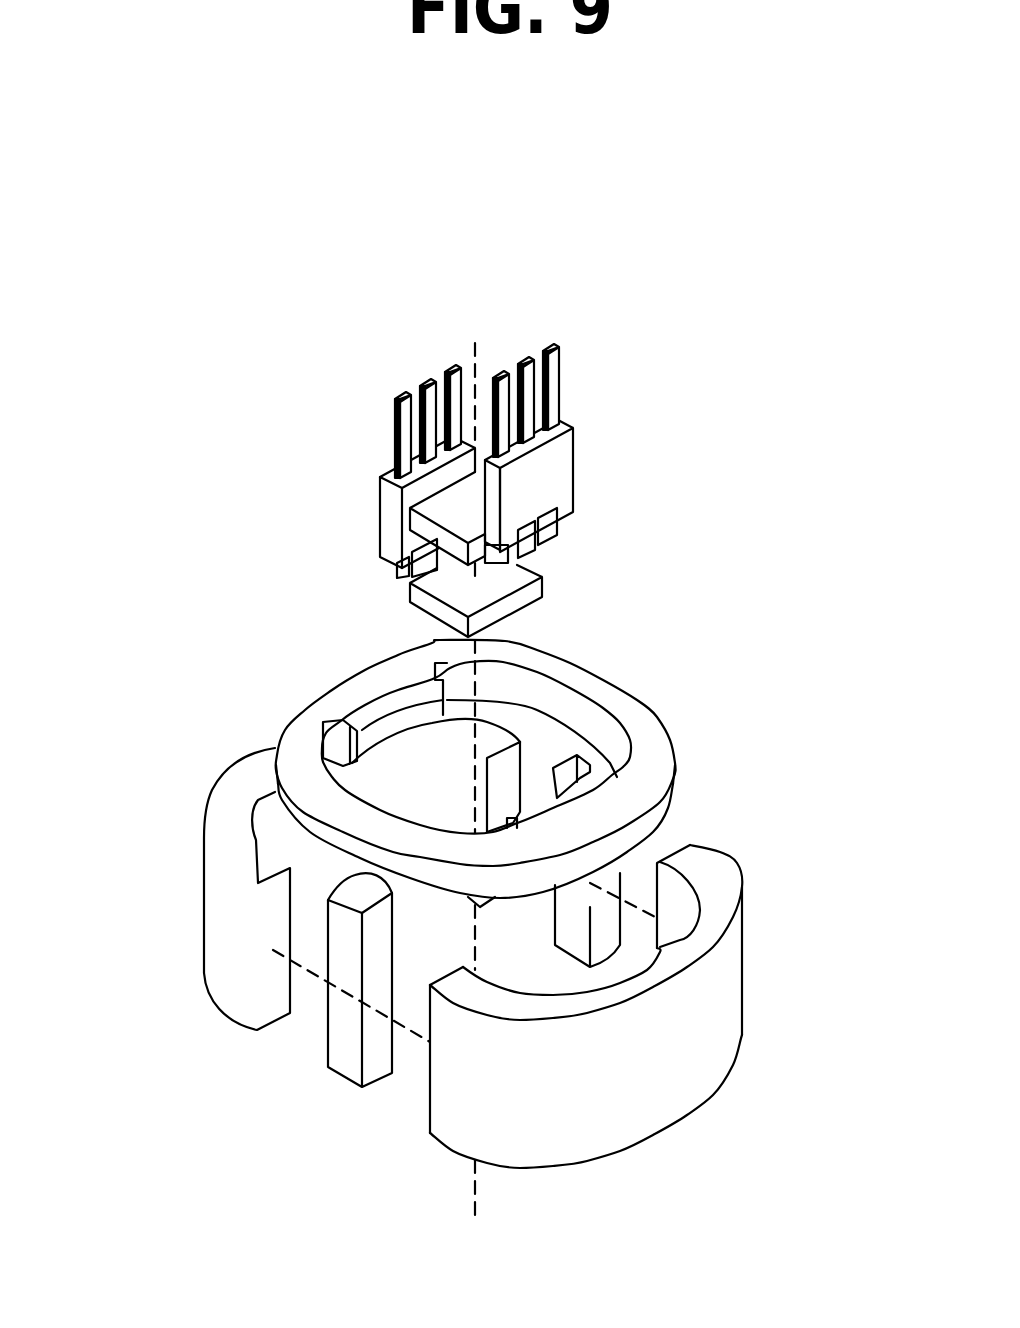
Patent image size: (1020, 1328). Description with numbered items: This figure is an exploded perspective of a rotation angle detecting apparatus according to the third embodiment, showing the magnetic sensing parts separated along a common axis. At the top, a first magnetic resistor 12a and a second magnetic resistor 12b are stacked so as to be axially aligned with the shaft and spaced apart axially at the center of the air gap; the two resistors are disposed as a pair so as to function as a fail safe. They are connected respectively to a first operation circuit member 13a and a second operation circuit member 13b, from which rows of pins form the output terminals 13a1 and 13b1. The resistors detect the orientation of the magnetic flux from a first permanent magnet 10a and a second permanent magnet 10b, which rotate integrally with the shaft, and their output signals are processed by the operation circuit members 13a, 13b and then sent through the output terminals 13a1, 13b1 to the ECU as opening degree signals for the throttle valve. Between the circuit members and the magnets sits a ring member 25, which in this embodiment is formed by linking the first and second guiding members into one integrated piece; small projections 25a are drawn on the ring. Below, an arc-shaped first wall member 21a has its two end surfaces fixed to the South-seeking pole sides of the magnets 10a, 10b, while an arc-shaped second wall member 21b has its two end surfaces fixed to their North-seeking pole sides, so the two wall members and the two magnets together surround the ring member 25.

The output terminal 13b1 is at (433, 383).
The output terminal 13a1 is at (560, 368).
The first operation circuit member 13a is at (540, 486).
The second operation circuit member 13b is at (390, 527).
The first magnetic resistor 12a is at (455, 502).
The second magnetic resistor 12b is at (503, 572).
The ring member 25 is at (633, 692).
The engagement projections of bobbin 25a is at (397, 720).
The first permanent magnet 10a is at (350, 1033).
The second permanent magnet 10b is at (612, 877).
The first wall member 21a is at (653, 1088).
The second wall member 21b is at (233, 940).